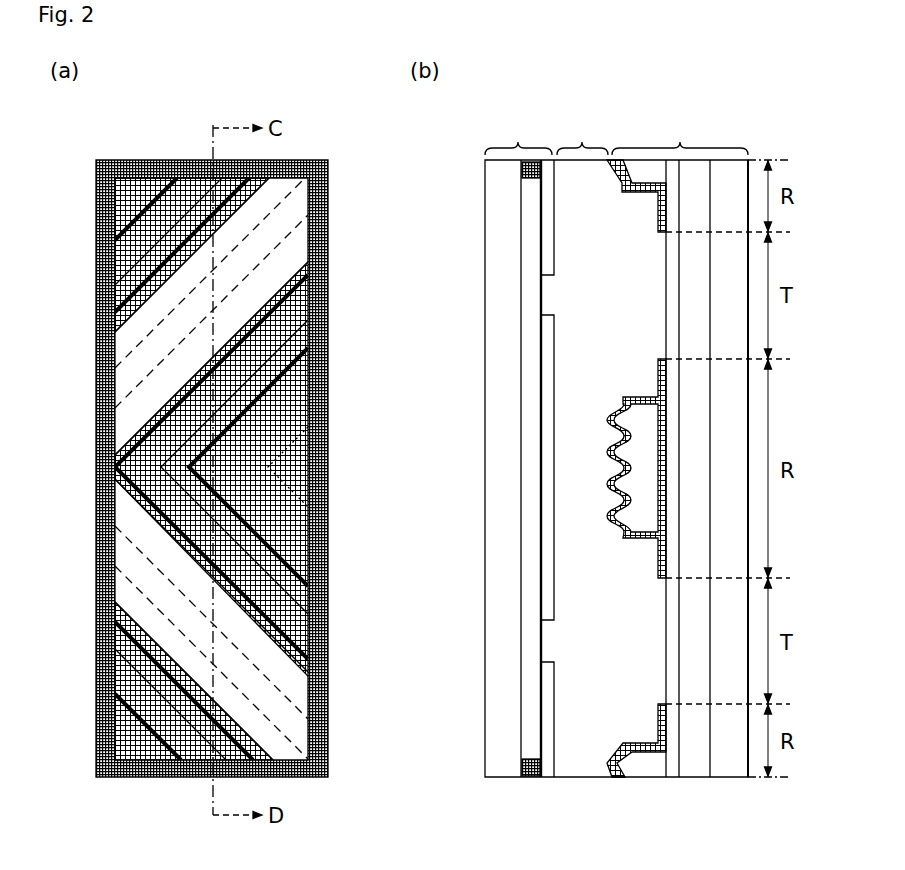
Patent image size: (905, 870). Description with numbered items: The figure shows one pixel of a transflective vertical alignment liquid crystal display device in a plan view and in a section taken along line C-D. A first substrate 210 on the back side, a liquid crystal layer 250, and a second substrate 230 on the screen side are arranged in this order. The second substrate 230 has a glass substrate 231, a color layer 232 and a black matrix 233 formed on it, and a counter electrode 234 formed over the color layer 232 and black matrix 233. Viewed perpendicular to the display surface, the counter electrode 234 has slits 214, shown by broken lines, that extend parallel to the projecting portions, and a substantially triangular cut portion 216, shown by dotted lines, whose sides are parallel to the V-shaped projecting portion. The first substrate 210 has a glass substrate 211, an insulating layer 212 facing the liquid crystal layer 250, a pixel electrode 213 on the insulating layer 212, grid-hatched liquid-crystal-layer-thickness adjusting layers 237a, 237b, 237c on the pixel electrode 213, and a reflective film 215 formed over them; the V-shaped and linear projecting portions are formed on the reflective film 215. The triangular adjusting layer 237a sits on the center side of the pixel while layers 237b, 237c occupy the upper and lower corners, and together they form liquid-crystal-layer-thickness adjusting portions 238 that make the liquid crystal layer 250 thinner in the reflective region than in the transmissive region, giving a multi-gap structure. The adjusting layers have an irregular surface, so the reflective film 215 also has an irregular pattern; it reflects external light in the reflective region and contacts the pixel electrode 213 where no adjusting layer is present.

The first substrate 210 is at (680, 135).
The glass substrate 211 is at (735, 777).
The insulating layer 212 is at (695, 777).
The pixel electrode 213 is at (672, 777).
The slits 214 is at (290, 212).
The reflective film 215 is at (615, 777).
The cut portion 216 is at (297, 470).
The second substrate 230 is at (518, 135).
The glass substrate 231 is at (503, 592).
The color layer 232 is at (528, 683).
The black matrix 233 is at (318, 640).
The counter electrode 234 is at (549, 777).
The liquid-crystal-layer-thickness adjusting layer 237a is at (300, 403).
The liquid-crystal-layer-thickness adjusting layer 237b is at (133, 190).
The liquid-crystal-layer-thickness adjusting layer 237c is at (135, 733).
The liquid-crystal-layer-thickness adjusting portions 238 is at (115, 212).
The liquid crystal layer 250 is at (574, 446).